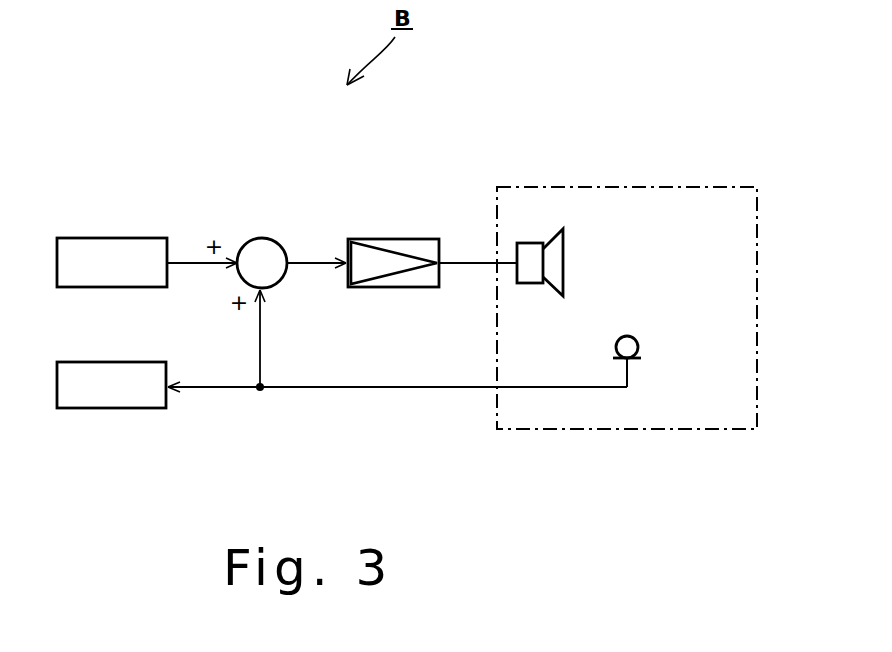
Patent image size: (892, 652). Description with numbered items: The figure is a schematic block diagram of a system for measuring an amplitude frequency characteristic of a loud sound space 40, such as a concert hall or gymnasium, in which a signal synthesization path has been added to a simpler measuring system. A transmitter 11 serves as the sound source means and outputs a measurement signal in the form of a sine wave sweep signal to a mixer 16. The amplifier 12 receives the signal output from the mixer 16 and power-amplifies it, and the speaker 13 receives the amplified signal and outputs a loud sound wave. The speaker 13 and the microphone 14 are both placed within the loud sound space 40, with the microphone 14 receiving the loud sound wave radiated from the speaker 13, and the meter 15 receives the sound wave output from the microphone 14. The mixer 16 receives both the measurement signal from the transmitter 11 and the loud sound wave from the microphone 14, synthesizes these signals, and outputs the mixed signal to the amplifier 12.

The transmitter 11 is at (109, 238).
The amplifier 12 is at (399, 239).
The speaker 13 is at (536, 243).
The microphone 14 is at (636, 338).
The meter 15 is at (101, 408).
The mixer 16 is at (269, 238).
The loud sound space 40 is at (657, 187).